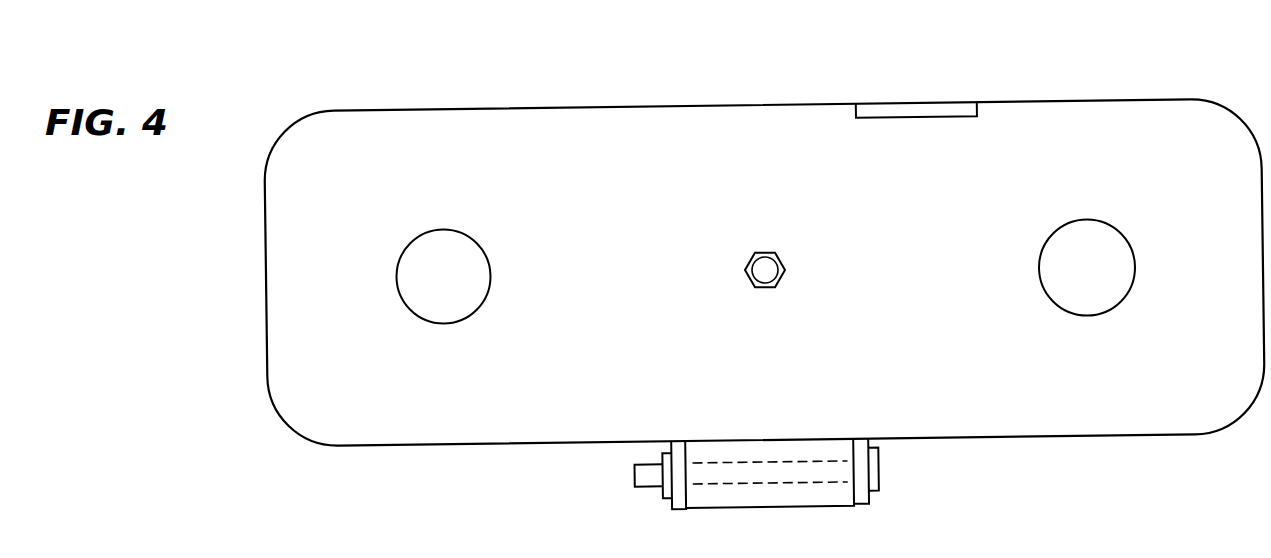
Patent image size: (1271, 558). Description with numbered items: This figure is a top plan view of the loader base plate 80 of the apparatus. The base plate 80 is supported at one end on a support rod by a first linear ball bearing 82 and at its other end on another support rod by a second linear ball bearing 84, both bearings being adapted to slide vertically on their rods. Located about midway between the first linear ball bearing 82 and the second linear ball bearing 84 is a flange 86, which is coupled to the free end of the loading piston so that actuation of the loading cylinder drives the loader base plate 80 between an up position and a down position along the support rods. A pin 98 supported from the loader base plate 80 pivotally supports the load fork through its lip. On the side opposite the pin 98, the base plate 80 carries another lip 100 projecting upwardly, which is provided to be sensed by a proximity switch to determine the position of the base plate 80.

The loader base plate 80 is at (683, 81).
The first linear ball bearing 82 is at (471, 233).
The second linear ball bearing 84 is at (1055, 232).
The flange 86 is at (752, 256).
The pin 98 is at (765, 508).
The lip 100 is at (930, 119).